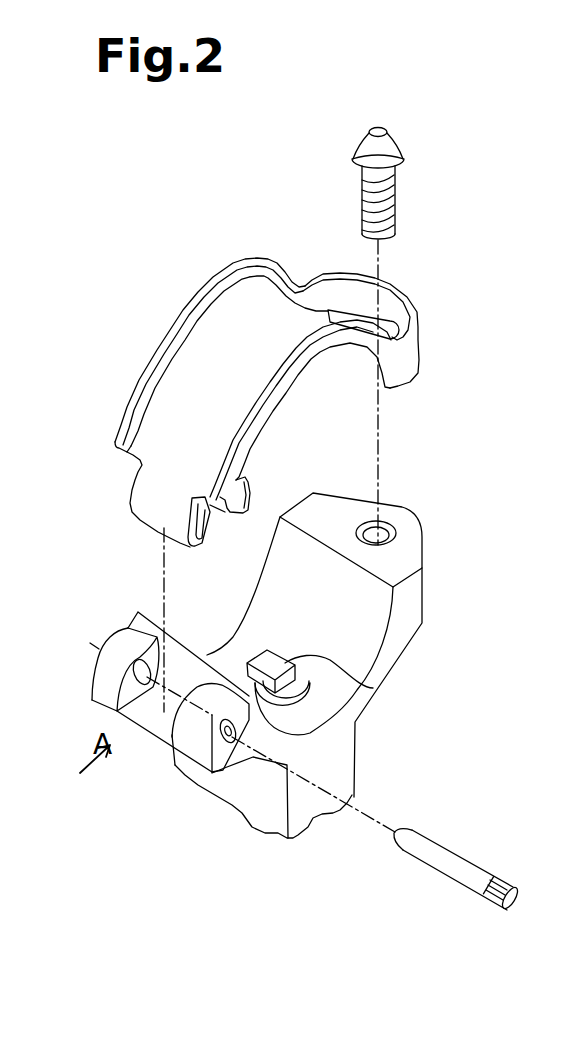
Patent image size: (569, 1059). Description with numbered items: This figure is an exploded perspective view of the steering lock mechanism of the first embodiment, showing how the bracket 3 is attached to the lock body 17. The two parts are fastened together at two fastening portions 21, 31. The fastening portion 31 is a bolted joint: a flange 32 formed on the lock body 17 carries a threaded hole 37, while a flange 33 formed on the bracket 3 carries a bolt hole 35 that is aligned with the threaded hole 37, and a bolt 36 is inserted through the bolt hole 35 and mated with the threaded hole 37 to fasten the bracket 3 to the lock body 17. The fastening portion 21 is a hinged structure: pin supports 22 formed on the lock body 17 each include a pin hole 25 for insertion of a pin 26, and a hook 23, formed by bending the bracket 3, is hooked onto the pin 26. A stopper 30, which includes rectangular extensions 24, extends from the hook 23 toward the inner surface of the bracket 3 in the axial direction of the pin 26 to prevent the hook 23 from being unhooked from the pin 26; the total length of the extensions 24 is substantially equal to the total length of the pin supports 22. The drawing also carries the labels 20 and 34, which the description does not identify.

The bracket 3 is at (198, 368).
The lock body 17 is at (407, 622).
The boss 20 is at (373, 688).
The fastening portion 21 is at (133, 775).
The pin supports 22 is at (125, 644).
The hook 23 is at (195, 548).
The extensions 24 is at (250, 486).
The pin hole 25 is at (232, 746).
The pin 26 is at (455, 862).
The stopper 30 is at (229, 514).
The fastening portion 31 is at (451, 597).
The flange 32 is at (417, 548).
The flange 33 is at (330, 318).
The flange tab 34 is at (388, 284).
The bolt hole 35 is at (410, 322).
The bolt 36 is at (400, 134).
The threaded hole 37 is at (387, 530).